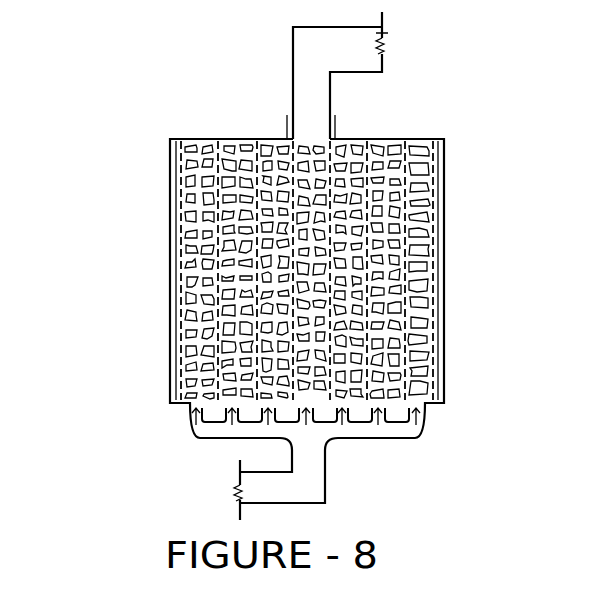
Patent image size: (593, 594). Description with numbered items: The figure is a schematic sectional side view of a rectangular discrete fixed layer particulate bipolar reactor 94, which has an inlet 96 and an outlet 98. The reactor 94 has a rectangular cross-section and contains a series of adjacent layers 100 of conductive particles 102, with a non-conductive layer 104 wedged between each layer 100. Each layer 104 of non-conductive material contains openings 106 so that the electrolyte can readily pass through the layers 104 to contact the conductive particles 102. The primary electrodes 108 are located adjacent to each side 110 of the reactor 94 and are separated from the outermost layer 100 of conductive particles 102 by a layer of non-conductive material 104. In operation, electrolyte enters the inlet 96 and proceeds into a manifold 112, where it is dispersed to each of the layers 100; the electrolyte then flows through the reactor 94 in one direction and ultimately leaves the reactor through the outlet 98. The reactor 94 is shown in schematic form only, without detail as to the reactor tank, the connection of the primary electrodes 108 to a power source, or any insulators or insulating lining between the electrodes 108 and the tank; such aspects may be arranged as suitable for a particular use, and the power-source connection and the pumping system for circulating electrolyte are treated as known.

The rectangular discrete fixed layer particulate bipolar reactor 94 is at (112, 280).
The inlet 96 is at (253, 497).
The outlet 98 is at (365, 33).
The layers 100 is at (298, 239).
The conductive particles 102 is at (190, 190).
The non-conductive layer 104 is at (403, 140).
The openings 106 is at (400, 193).
The primary electrodes 108 is at (175, 228).
The side 110 is at (170, 308).
The manifold 112 is at (352, 428).